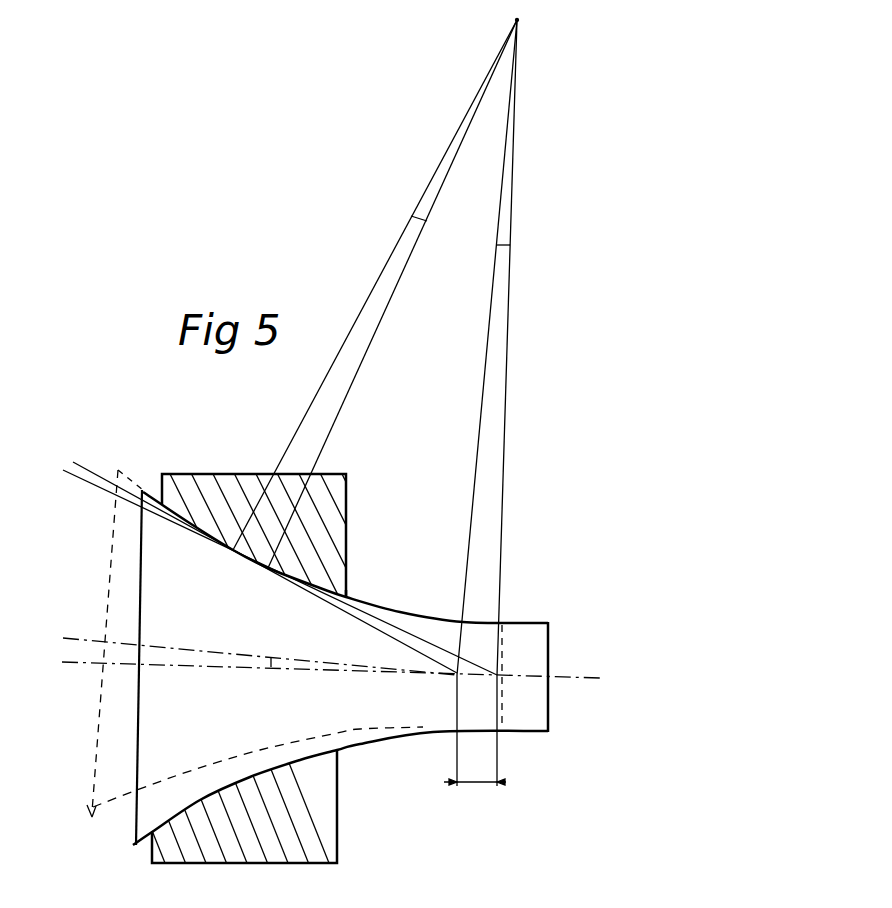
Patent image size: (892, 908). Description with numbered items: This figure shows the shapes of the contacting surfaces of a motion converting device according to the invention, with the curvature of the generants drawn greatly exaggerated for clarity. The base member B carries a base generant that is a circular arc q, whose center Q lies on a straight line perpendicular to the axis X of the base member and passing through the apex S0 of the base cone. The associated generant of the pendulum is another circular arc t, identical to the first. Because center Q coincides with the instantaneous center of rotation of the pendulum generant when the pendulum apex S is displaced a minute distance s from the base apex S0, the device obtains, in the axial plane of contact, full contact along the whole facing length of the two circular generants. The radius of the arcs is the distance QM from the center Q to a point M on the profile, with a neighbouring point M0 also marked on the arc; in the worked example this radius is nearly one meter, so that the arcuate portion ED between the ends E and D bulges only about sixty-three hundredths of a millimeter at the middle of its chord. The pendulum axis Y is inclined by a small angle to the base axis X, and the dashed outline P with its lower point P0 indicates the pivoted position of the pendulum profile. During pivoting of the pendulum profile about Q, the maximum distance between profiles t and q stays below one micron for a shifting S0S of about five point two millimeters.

The nozzle body block B is at (348, 514).
The circular arc generant of the pendulum t is at (386, 606).
The end of arcuate portion ED E is at (347, 596).
The end of arcuate portion ED D is at (160, 502).
The pivoted diaphragm position P is at (90, 780).
The diaphragm lower end point P0 is at (133, 833).
The center of the circular arc generants Q is at (532, 21).
The point on the generant defining radius QM M is at (234, 552).
The reference point on wall M0 is at (268, 569).
The apex of the pendulum cone S is at (456, 677).
The apex of the base cone S0 is at (496, 678).
The minute displacement distance s is at (475, 795).
The circular arc base generant q is at (355, 603).
The axis of the base member X is at (322, 666).
The Y axis Y is at (253, 651).